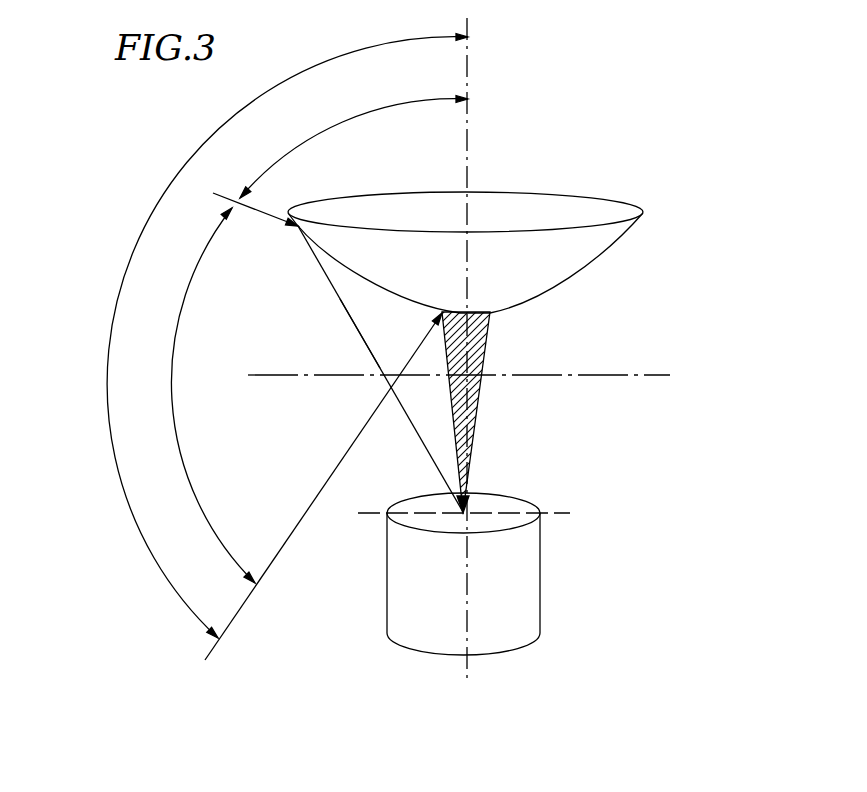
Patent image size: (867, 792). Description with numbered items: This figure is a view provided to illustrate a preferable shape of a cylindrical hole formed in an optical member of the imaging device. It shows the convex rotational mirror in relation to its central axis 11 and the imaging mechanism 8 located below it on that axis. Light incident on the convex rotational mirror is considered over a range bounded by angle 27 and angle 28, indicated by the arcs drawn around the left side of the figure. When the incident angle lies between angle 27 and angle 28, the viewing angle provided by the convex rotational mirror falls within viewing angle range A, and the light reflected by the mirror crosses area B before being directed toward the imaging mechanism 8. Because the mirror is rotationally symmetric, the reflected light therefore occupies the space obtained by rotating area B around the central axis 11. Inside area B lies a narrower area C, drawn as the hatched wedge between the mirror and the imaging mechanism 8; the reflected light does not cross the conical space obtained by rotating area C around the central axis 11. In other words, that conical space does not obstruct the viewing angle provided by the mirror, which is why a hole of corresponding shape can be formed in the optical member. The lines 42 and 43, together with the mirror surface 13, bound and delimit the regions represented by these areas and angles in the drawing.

The imaging mechanism 8 is at (387, 583).
The central axis 11 is at (467, 148).
The dish-shaped reflector / mirror 13 is at (593, 245).
The angle 27 is at (388, 107).
The angle 28 is at (156, 205).
The beam edge line 42 is at (326, 272).
The beam edge line 43 is at (450, 398).
The viewing angle range A is at (168, 378).
The area B is at (365, 312).
The area C is at (479, 385).